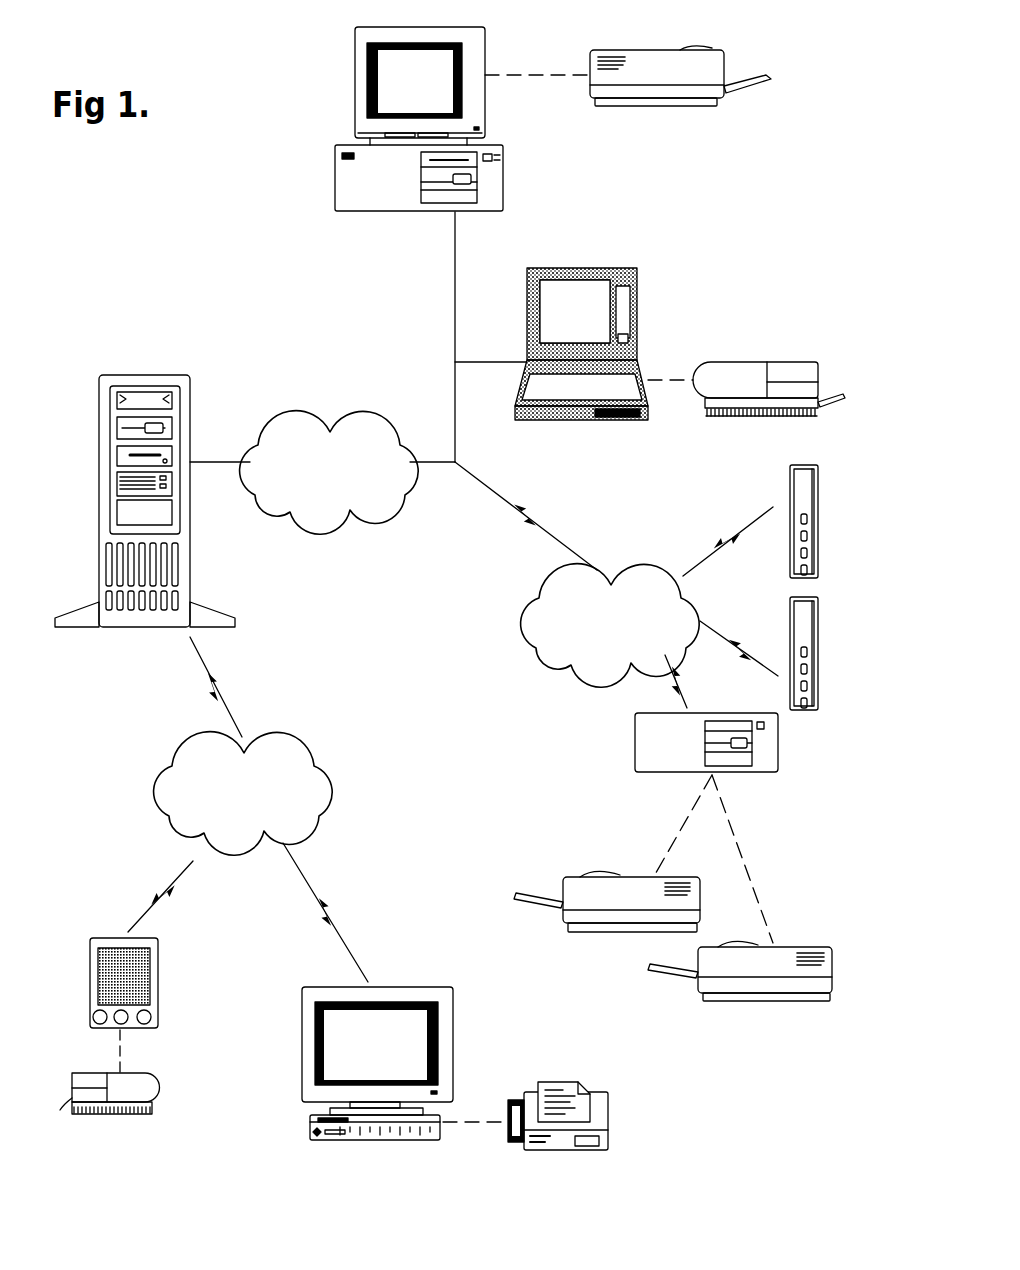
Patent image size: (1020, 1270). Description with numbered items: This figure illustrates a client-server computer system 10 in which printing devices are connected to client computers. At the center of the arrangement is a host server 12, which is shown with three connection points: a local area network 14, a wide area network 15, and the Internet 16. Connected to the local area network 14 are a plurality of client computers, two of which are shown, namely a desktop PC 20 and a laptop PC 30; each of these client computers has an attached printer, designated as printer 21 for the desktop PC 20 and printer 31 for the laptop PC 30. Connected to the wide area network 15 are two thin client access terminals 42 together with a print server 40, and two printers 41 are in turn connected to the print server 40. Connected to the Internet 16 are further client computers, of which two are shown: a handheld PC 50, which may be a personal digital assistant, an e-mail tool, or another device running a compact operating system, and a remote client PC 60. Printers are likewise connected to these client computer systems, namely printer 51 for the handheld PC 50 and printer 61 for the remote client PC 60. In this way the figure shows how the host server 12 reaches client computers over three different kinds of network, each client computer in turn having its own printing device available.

The client-server computer system 10 is at (117, 283).
The host server 12 is at (233, 614).
The local area network 14 is at (368, 523).
The wide area network 15 is at (520, 625).
The Internet 16 is at (320, 803).
The desktop PC 20 is at (507, 144).
The printer 21 is at (717, 53).
The laptop PC 30 is at (643, 320).
The printer 31 is at (803, 354).
The print server 40 is at (802, 757).
The printers 41 is at (572, 873).
The thin client access terminals 42 is at (782, 570).
The handheld PC 50 is at (163, 980).
The printer 51 is at (175, 1088).
The remote client PC 60 is at (462, 1057).
The printer 61 is at (618, 1138).